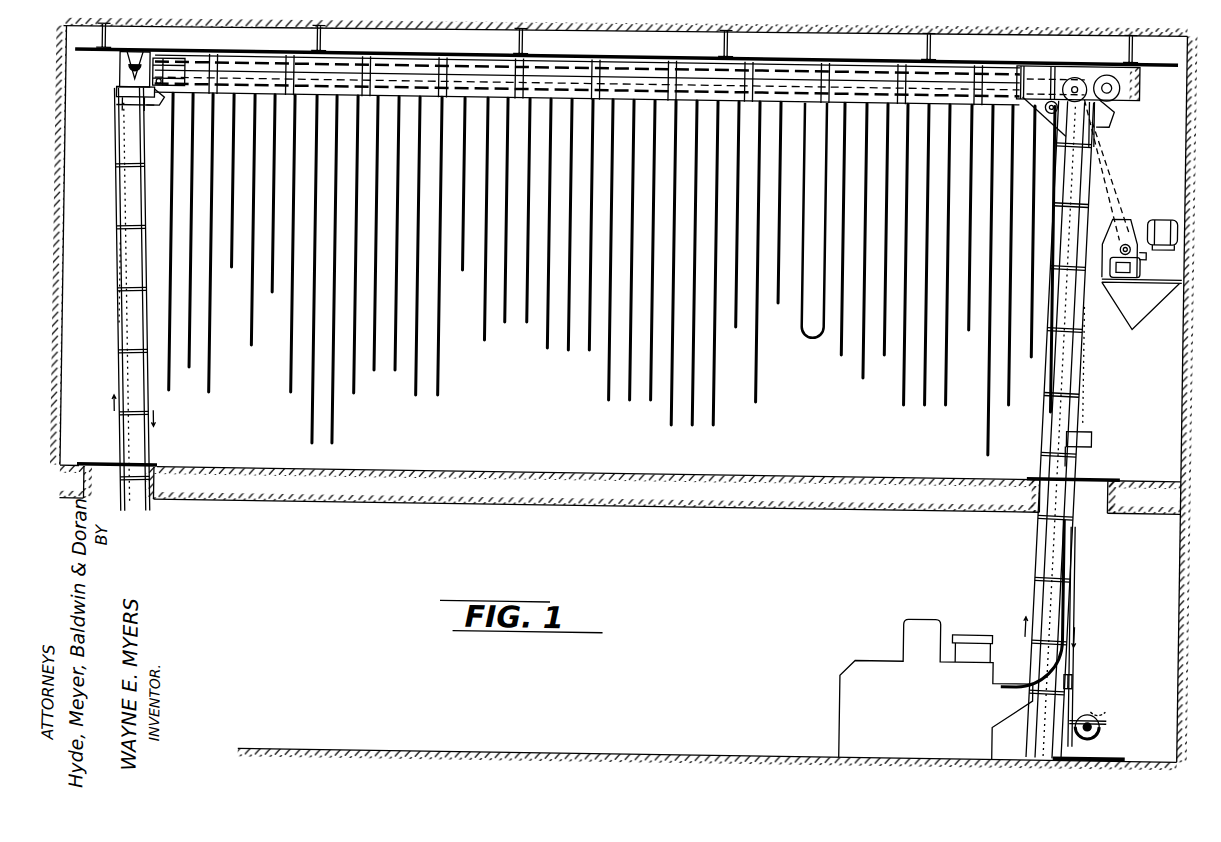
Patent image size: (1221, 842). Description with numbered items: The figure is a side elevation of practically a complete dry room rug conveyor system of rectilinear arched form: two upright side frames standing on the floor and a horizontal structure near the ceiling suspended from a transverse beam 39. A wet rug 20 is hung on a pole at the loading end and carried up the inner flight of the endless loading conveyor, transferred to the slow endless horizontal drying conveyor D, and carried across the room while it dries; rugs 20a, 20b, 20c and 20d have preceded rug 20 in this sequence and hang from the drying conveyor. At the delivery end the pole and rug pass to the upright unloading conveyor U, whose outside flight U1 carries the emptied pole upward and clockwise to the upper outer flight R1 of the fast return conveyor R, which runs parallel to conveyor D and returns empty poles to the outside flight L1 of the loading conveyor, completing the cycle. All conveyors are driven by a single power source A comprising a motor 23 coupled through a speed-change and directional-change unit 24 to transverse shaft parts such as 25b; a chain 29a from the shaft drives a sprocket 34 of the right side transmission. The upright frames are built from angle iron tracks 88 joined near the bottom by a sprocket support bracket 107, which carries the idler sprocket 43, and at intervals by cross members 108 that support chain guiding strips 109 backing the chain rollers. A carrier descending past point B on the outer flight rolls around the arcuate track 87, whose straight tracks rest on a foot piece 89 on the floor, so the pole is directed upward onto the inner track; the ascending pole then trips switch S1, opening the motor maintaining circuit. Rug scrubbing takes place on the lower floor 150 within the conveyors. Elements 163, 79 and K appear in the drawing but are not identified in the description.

The drive housing 163 is at (124, 78).
The upper outer flight of return conveyor R1 is at (526, 61).
The return conveyor R is at (537, 100).
The horizontal drying conveyor D is at (540, 100).
The guide track 79 is at (667, 60).
The transverse beam 39 is at (723, 45).
The sprocket 34 is at (980, 57).
The chain 29a is at (1094, 111).
The speed-change and directional-change unit 24 is at (1120, 210).
The power source A is at (1152, 210).
The motor 23 is at (1157, 217).
The transverse shaft part 25b is at (1125, 262).
The cross members 108 is at (1078, 385).
The outside flight of loading conveyor L1 is at (1097, 401).
The chain guiding strips 109 is at (1089, 440).
The rod carrier K is at (1069, 446).
The rug 20a is at (1053, 406).
The rug 20b is at (1034, 351).
The rug 20c is at (1014, 399).
The rug 20d is at (991, 443).
The wet rug 20 is at (1062, 559).
The angle iron tracks 88 is at (1071, 599).
The switch S1 is at (1072, 670).
The point on outer flight B is at (1117, 677).
The idler sprocket 43 is at (1101, 709).
The sprocket support bracket 107 is at (1112, 722).
The arcuate track 87 is at (1110, 733).
The foot piece 89 is at (1064, 751).
The lower floor 150 is at (597, 753).
The outside flight of unloading conveyor U1 is at (108, 392).
The unloading conveyor U is at (133, 404).